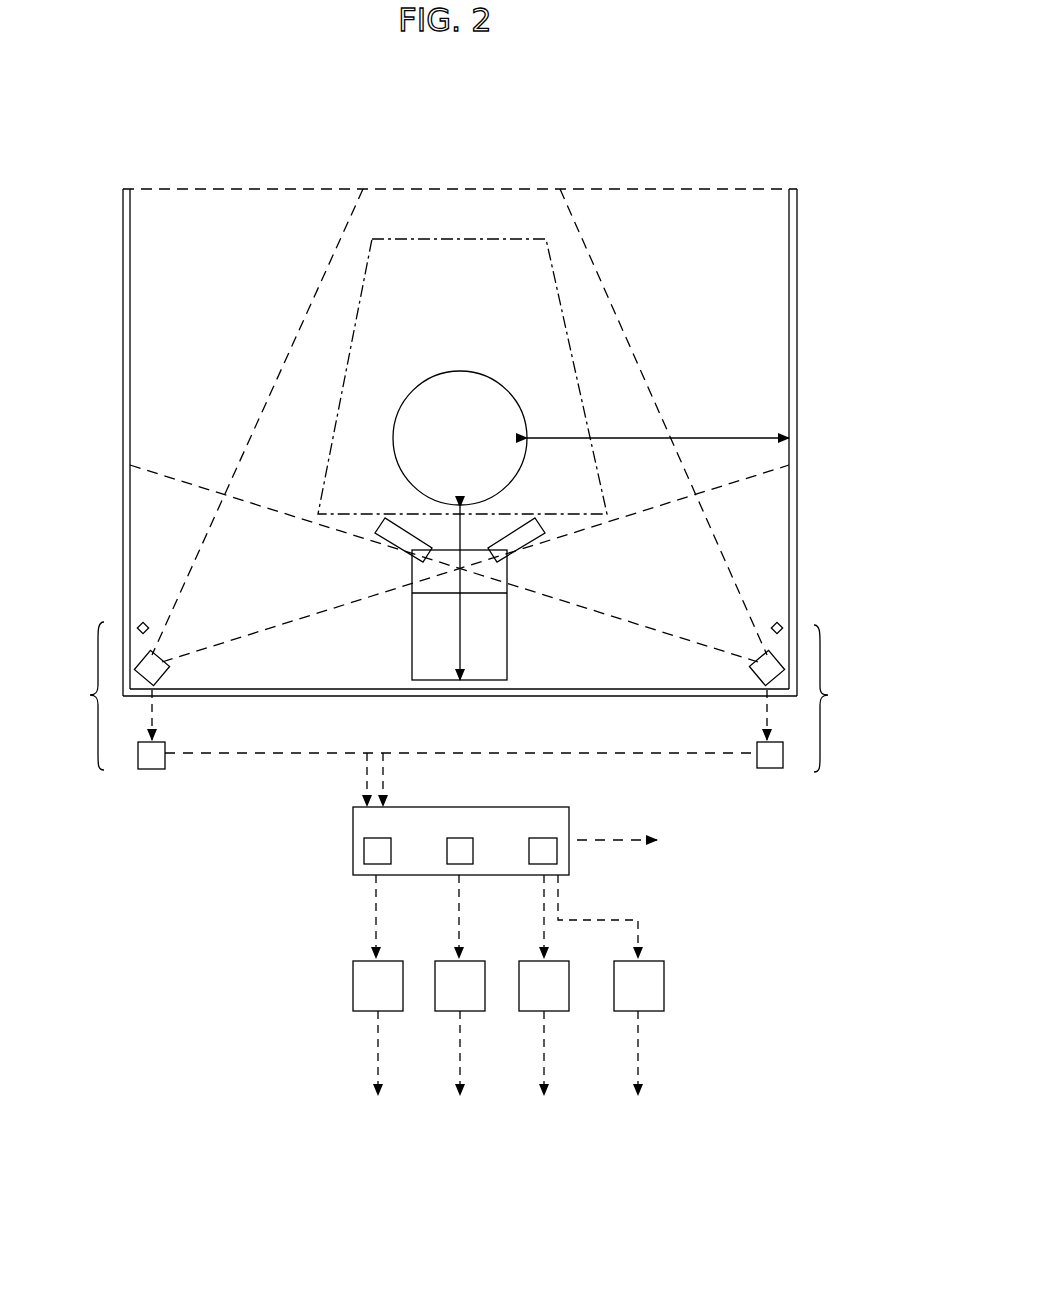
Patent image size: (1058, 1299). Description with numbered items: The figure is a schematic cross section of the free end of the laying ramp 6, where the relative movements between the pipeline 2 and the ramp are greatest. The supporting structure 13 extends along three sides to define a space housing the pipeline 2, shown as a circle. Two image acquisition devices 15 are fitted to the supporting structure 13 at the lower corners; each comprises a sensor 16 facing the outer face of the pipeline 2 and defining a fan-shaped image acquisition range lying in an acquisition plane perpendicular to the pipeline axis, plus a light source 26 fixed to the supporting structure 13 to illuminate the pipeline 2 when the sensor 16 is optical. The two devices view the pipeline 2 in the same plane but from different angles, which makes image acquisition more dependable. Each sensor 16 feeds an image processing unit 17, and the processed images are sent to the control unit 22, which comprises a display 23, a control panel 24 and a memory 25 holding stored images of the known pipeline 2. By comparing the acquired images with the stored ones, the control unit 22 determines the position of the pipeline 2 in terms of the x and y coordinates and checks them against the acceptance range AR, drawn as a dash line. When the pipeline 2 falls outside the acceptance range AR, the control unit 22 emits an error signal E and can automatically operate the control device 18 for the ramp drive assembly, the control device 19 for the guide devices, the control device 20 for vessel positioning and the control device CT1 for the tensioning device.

The pipeline 2 is at (522, 462).
The laying ramp 6 is at (815, 282).
The supporting structure 13 is at (797, 368).
The image acquisition device 15 is at (85, 694).
The sensor 16 is at (162, 661).
The image processing unit 17 is at (157, 752).
The control device 18 is at (360, 995).
The control device 19 is at (446, 990).
The control device 20 is at (529, 995).
The control unit 22 is at (490, 836).
The display 23 is at (545, 848).
The control panel 24 is at (461, 848).
The memory 25 is at (367, 855).
The light source 26 is at (141, 623).
The acceptance range AR is at (517, 268).
The control device CT1 is at (648, 993).
The error signal E is at (617, 827).
The X coordinate x is at (716, 438).
The Y coordinate y is at (461, 652).